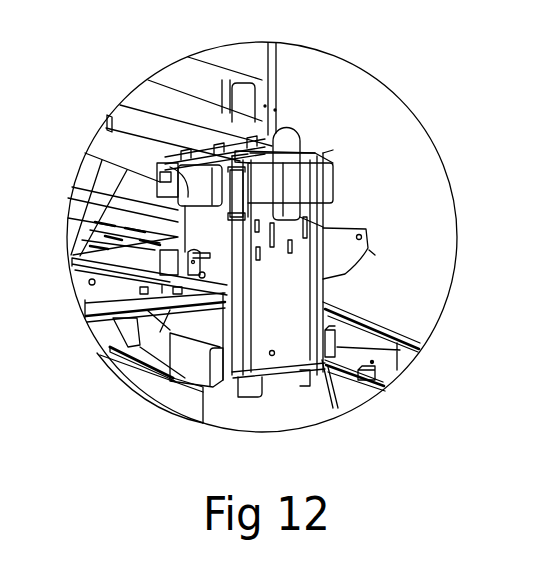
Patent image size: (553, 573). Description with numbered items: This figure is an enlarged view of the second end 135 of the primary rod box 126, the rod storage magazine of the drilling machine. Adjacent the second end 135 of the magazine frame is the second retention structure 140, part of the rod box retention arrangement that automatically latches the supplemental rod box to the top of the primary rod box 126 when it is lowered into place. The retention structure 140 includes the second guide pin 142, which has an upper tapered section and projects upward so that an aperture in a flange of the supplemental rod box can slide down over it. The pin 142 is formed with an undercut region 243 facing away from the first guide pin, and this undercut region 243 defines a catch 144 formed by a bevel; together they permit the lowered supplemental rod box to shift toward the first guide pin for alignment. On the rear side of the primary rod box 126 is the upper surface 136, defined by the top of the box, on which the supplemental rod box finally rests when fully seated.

The primary rod box 126 is at (412, 258).
The second end 135 is at (285, 318).
The upper surface 136 is at (317, 150).
The second retention structure 140 is at (342, 136).
The second guide pin 142 is at (289, 134).
The catch 144 is at (305, 163).
The undercut region 243 is at (293, 197).